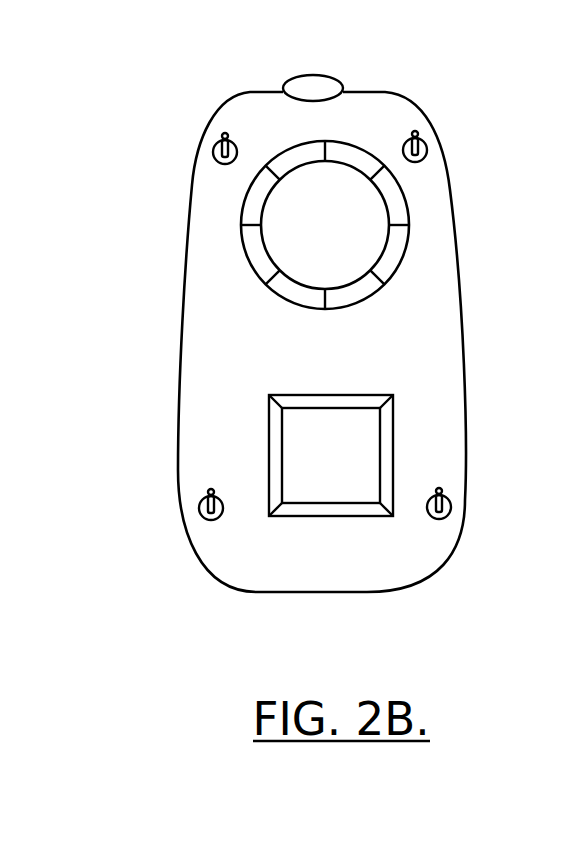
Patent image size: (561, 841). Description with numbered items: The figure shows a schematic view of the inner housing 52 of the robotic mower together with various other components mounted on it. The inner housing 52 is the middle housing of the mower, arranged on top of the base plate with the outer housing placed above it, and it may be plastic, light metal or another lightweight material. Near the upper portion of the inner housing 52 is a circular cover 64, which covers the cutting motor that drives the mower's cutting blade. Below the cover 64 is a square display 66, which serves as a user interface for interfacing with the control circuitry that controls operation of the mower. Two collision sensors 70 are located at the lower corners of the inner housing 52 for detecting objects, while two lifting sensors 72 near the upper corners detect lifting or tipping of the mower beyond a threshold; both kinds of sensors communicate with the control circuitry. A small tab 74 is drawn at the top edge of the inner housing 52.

The inner housing 52 is at (438, 367).
The cover 64 is at (360, 243).
The display 66 is at (338, 487).
The collision sensors 70 is at (200, 508).
The lifting sensors 72 is at (214, 152).
The top tab 74 is at (308, 82).